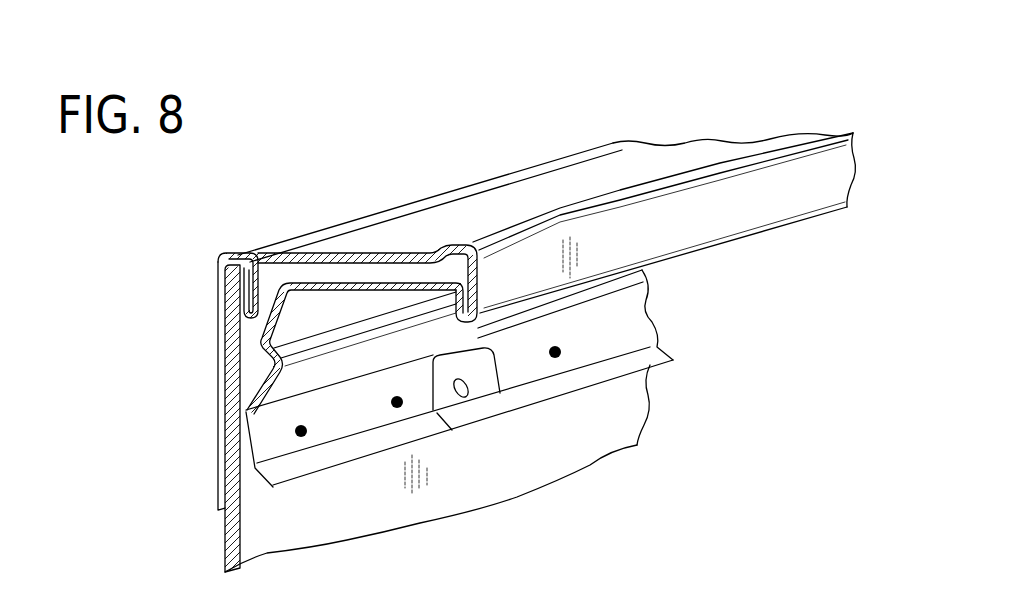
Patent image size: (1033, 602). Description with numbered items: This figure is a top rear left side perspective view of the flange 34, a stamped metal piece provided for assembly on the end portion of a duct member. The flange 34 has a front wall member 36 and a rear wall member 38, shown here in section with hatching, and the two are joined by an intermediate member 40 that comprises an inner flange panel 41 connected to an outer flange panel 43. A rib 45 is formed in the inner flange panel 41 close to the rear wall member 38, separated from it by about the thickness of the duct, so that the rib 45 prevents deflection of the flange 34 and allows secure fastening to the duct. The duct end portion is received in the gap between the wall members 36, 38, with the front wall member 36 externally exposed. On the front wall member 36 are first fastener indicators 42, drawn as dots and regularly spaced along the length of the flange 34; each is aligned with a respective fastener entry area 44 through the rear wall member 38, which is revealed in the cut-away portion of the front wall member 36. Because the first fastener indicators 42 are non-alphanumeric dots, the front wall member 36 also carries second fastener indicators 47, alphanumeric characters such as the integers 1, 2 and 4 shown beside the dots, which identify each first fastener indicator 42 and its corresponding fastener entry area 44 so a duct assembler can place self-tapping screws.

The flange 34 is at (738, 128).
The front wall member 36 is at (635, 328).
The rear wall member 38 is at (220, 300).
The intermediate member 40 is at (868, 293).
The inner flange panel 41 is at (347, 253).
The first fastener indicators 42 is at (395, 408).
The outer flange panel 43 is at (387, 285).
The fastener entry areas 44 is at (463, 398).
The rib 45 is at (245, 253).
The second fastener indicators 47 is at (563, 333).
The integer of second fastener indicators 1 is at (298, 416).
The integer of second fastener indicators 2 is at (394, 387).
The integer of second fastener indicators 4 is at (553, 337).